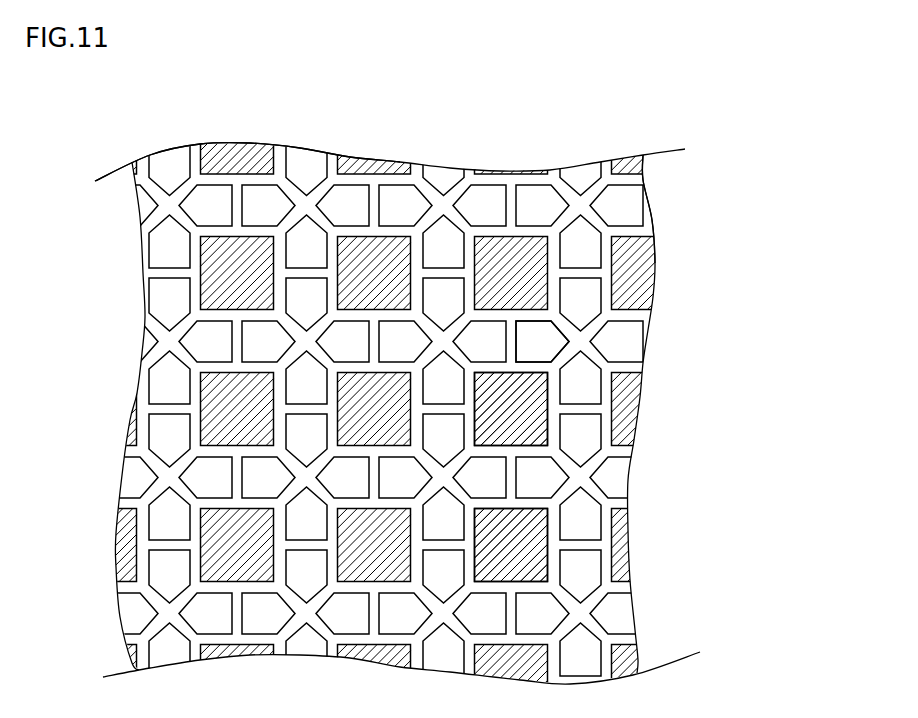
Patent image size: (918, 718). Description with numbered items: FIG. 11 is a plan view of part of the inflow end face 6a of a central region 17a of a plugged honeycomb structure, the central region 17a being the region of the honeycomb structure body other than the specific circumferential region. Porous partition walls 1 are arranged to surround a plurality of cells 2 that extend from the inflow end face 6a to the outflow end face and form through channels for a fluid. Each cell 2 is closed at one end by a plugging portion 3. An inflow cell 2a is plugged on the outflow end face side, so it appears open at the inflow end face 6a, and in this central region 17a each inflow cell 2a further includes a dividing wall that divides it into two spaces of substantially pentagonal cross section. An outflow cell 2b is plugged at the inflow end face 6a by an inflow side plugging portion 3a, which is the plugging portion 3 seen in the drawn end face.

The partition wall 1 is at (610, 273).
The cell 2 is at (627, 362).
The inflow cell 2a is at (540, 343).
The outflow cell 2b is at (510, 410).
The plugging portion 3 is at (626, 537).
The inflow side plugging portion 3a is at (507, 547).
The inflow end face 6a is at (368, 128).
The central region 17a is at (706, 79).